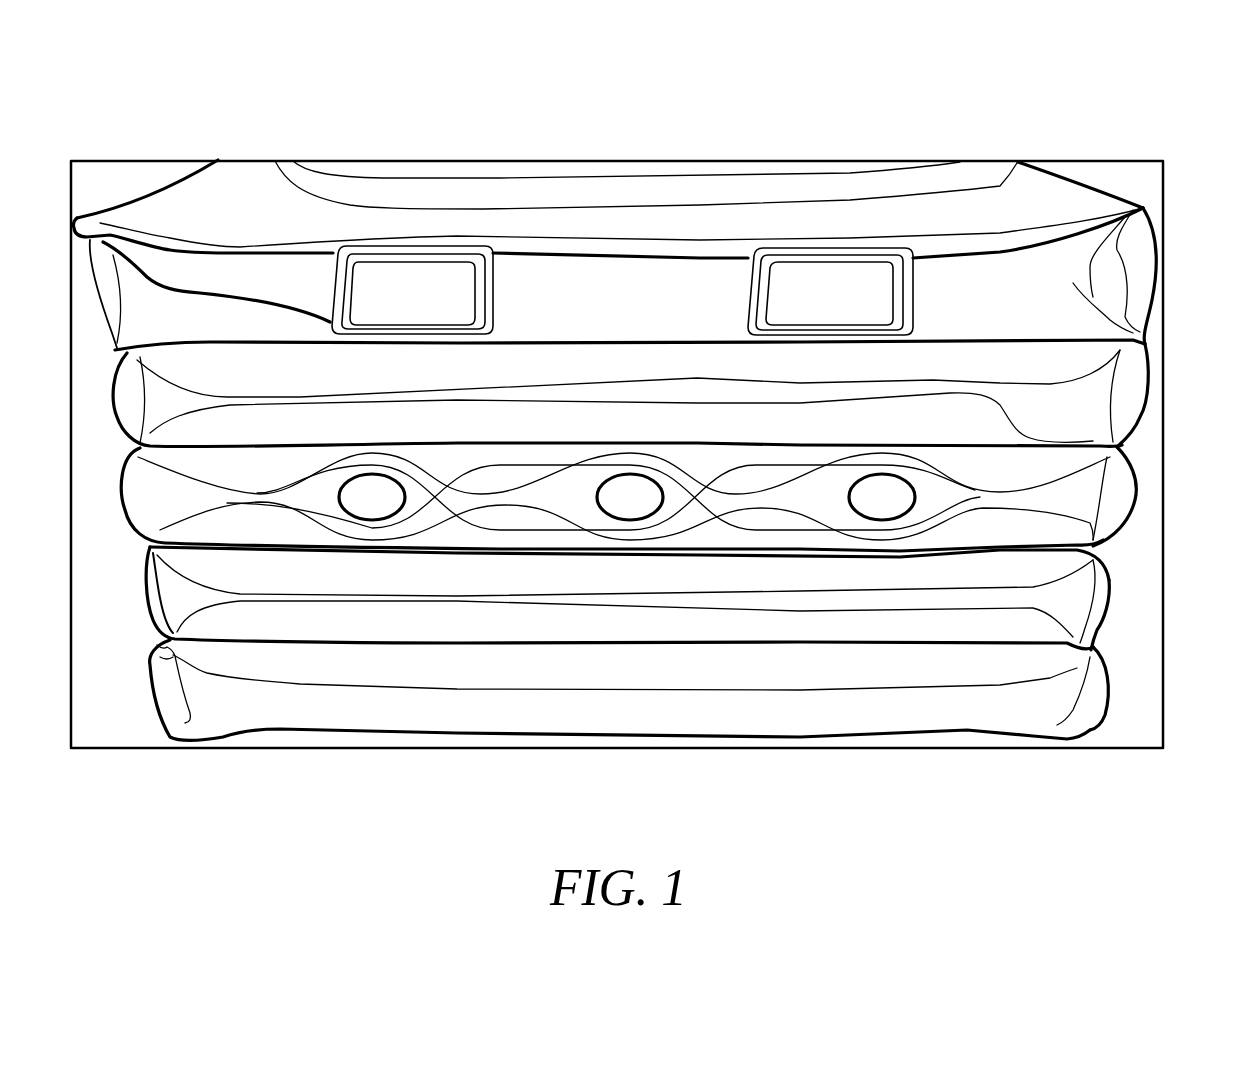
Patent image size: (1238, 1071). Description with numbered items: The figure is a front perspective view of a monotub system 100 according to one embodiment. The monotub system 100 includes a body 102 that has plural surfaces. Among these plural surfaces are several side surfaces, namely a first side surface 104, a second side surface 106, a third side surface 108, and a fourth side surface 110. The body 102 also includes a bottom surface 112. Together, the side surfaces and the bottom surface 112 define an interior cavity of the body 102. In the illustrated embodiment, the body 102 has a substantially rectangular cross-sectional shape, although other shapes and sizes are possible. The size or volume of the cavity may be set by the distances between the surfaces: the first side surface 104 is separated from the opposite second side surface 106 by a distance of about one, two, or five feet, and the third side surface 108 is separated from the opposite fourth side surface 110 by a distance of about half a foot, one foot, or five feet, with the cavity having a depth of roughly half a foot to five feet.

The monotub system 100 is at (1065, 103).
The body 102 is at (614, 222).
The first side surface 104 is at (620, 429).
The second side surface 106 is at (1150, 414).
The third side surface 108 is at (535, 158).
The fourth side surface 110 is at (1075, 425).
The bottom surface 112 is at (318, 752).